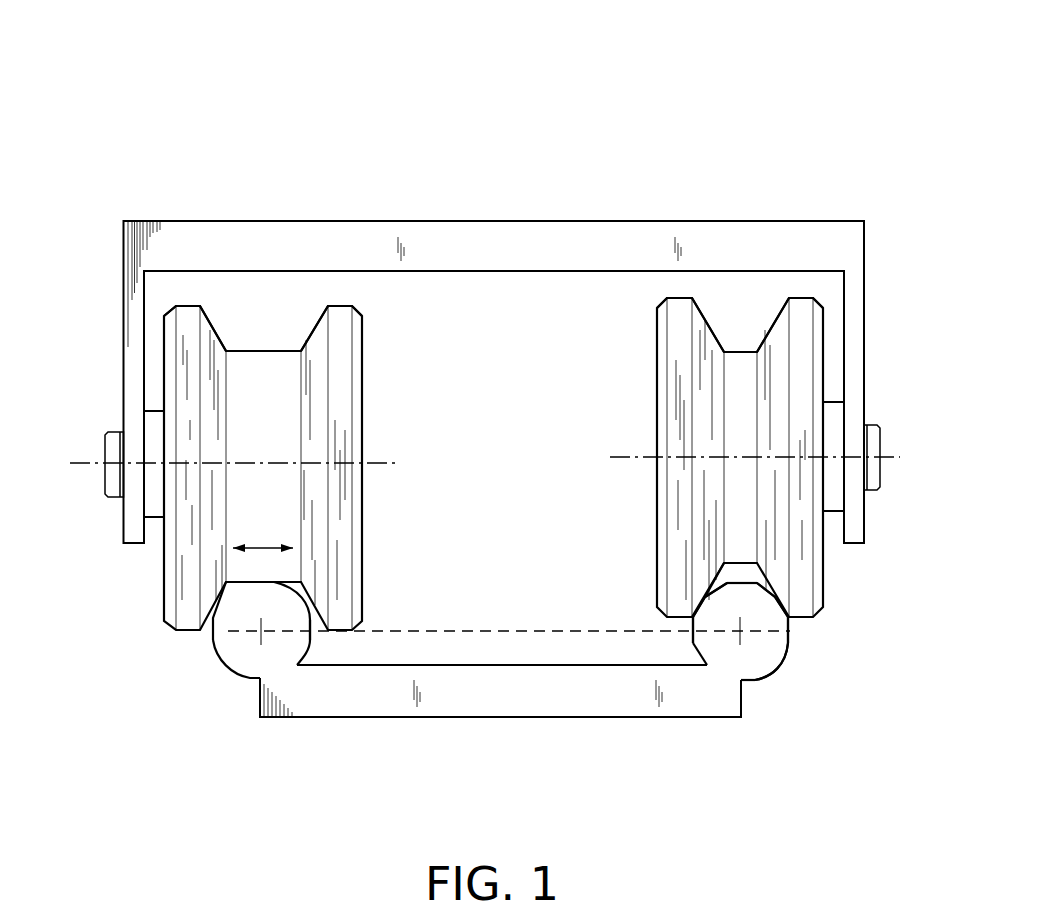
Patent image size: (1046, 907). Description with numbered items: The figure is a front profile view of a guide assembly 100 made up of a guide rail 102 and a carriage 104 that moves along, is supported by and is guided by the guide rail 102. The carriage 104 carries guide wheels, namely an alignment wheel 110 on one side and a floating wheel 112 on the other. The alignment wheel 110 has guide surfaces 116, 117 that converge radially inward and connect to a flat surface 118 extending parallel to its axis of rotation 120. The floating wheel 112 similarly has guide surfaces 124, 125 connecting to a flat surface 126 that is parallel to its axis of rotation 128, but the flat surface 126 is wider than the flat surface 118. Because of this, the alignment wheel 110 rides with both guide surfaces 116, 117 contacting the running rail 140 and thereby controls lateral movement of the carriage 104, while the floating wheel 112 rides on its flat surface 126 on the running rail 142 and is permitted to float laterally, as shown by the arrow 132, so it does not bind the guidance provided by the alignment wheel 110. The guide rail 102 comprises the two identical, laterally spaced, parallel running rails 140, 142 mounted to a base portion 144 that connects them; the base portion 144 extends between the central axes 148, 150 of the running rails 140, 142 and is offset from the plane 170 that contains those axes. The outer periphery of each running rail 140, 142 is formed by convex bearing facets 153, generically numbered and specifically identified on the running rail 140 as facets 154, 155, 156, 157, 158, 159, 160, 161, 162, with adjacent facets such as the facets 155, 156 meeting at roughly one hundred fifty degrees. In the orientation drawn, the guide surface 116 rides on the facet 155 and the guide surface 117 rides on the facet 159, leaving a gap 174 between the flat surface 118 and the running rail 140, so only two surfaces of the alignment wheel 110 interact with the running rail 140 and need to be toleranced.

The guide assembly 100 is at (590, 118).
The guide rail 102 is at (523, 642).
The carriage 104 is at (893, 291).
The alignment wheel 110 is at (673, 332).
The floating wheel 112 is at (349, 349).
The guide surface 116 is at (697, 318).
The guide surface 117 is at (781, 330).
The flat surface 118 is at (738, 350).
The axis of rotation 120 is at (637, 453).
The guide surface 124 is at (218, 327).
The guide surface 125 is at (344, 346).
The flat surface 126 is at (233, 350).
The axis of rotation 128 is at (80, 462).
The arrow 132 is at (263, 550).
The running rail 140 is at (772, 645).
The running rail 142 is at (227, 648).
The base portion 144 is at (455, 703).
The central axis 148 is at (757, 616).
The central axis 150 is at (267, 672).
The facet 153 is at (312, 640).
The facet 154 is at (692, 625).
The facet 155 is at (702, 603).
The facet 156 is at (716, 587).
The facet 157 is at (757, 583).
The facet 158 is at (770, 589).
The facet 159 is at (787, 609).
The facet 160 is at (790, 630).
The facet 161 is at (780, 658).
The facet 162 is at (763, 680).
The plane 170 is at (560, 630).
The gap 174 is at (730, 571).